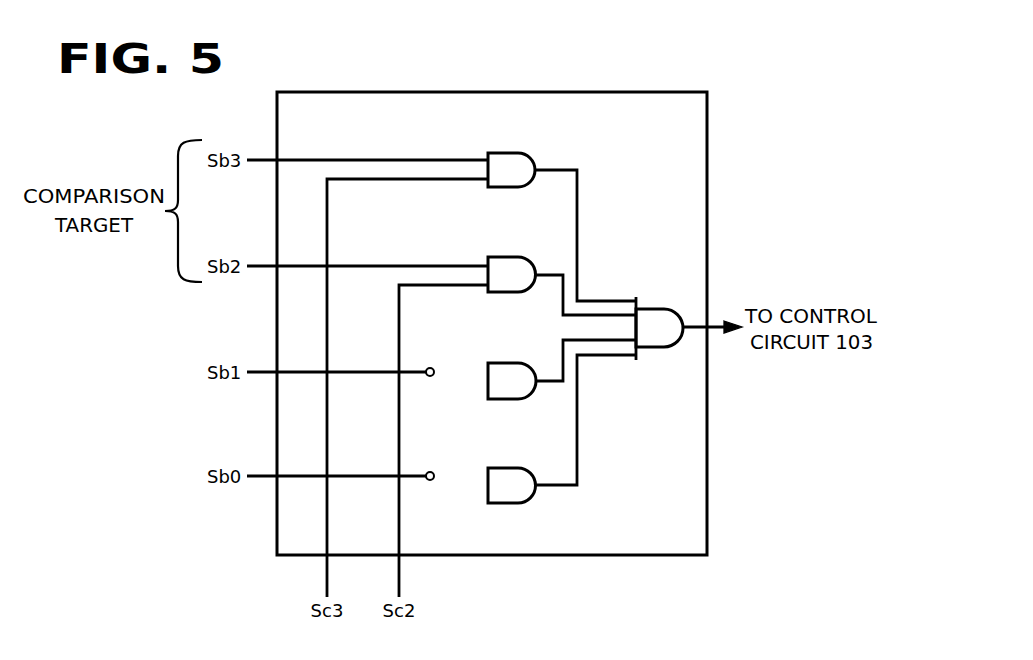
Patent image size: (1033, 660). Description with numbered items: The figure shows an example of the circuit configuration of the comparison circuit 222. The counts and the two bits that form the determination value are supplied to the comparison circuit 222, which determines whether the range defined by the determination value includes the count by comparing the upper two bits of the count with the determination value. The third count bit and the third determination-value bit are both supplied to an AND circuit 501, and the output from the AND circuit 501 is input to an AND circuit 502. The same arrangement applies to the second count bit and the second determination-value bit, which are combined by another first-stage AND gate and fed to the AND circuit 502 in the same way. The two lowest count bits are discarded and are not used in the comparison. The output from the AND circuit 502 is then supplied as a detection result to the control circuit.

The comparison circuit 222 is at (606, 91).
The AND circuit 501 is at (526, 152).
The AND circuit 502 is at (654, 306).